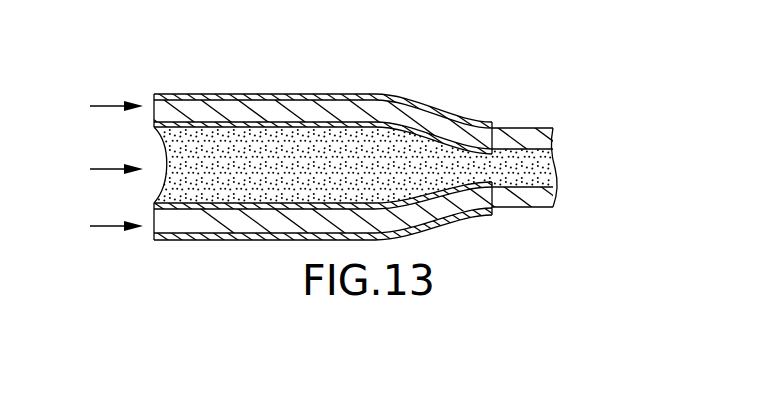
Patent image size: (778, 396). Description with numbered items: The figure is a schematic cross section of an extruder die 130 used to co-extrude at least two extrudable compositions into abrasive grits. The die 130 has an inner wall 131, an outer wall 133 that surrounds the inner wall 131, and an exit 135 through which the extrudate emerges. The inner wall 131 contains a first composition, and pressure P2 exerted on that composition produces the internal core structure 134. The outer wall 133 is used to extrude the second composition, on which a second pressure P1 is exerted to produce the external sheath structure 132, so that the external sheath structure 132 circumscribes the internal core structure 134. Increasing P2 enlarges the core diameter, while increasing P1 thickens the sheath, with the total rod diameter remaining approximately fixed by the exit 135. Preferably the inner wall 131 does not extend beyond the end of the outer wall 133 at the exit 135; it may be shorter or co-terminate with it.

The extruder die 130 is at (387, 141).
The inner wall 131 is at (155, 128).
The external sheath structure 132 is at (535, 134).
The outer wall 133 is at (165, 94).
The internal core structure 134 is at (556, 168).
The exit 135 is at (513, 197).
The second pressure P1 is at (100, 167).
The pressure P2 is at (99, 169).